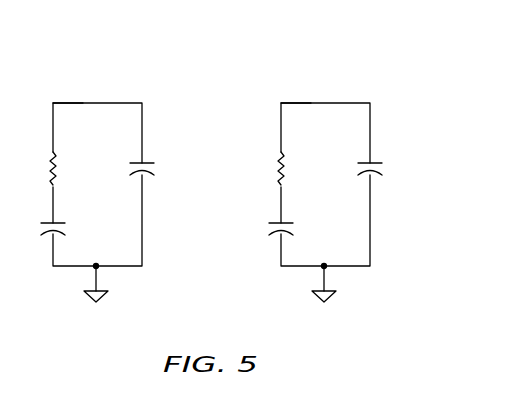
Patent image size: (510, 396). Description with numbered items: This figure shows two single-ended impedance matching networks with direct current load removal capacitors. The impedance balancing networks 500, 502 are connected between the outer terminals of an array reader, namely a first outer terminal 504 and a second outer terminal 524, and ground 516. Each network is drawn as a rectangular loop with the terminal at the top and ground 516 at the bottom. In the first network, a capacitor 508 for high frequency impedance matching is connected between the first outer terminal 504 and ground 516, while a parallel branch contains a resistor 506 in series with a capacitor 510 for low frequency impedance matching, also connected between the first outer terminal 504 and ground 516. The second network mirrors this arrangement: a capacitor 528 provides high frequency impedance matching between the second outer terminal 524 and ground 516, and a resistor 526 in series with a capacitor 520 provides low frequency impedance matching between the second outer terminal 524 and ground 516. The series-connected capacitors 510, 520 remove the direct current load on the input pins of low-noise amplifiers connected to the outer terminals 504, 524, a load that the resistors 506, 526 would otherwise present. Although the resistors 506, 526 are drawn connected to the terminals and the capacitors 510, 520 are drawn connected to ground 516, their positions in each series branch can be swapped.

The impedance balancing network 500 is at (107, 58).
The impedance balancing network 502 is at (335, 58).
The terminal HRPA 504 is at (58, 101).
The resistor 506 is at (53, 158).
The capacitor 508 is at (145, 162).
The capacitor 510 is at (50, 223).
The ground 516 is at (90, 298).
The terminal HRNC 524 is at (286, 101).
The resistor 526 is at (281, 158).
The capacitor 528 is at (373, 162).
The capacitor 520 is at (278, 223).